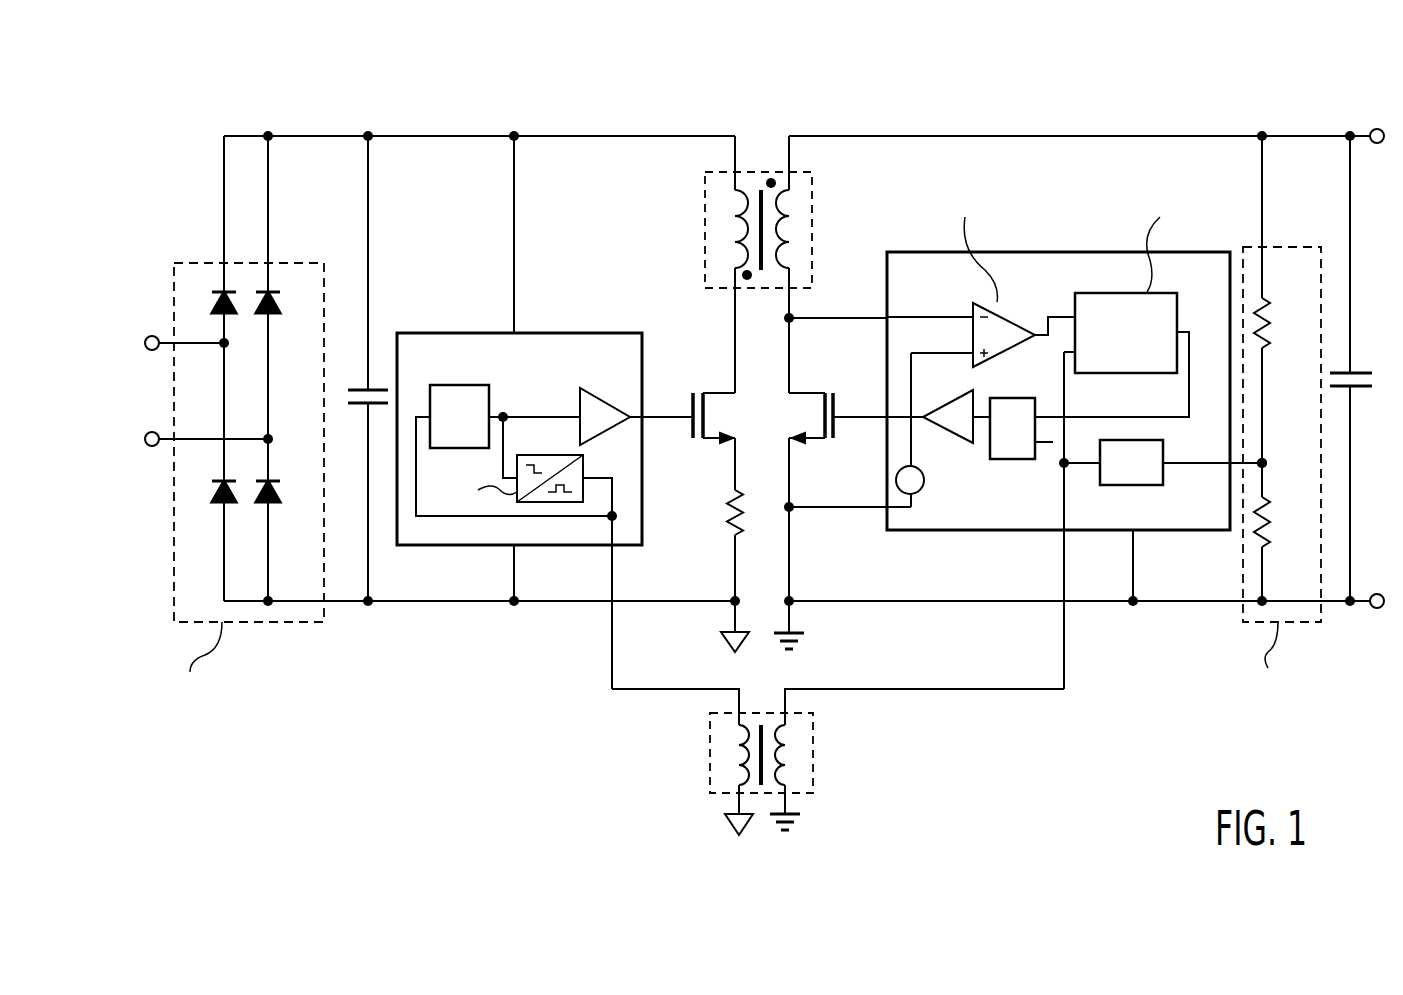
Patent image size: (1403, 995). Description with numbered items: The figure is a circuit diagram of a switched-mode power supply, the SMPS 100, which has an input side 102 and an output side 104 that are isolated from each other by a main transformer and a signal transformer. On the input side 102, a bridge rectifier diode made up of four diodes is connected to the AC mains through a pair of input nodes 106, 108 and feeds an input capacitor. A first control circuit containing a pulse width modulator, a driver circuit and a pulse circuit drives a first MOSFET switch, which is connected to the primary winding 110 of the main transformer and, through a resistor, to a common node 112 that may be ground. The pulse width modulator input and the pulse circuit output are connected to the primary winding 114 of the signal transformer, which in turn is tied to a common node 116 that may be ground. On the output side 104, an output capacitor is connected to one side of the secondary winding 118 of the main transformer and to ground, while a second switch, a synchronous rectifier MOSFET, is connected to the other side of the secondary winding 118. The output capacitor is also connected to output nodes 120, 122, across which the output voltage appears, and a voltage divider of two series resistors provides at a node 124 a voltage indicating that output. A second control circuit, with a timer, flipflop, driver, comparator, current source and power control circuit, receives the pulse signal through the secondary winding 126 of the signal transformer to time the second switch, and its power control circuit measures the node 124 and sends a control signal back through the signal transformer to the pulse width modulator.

The SMPS 100 is at (1158, 745).
The input side 102 is at (410, 112).
The output side 104 is at (1072, 114).
The input node 106 is at (147, 337).
The input node 108 is at (152, 446).
The primary winding 110 is at (745, 187).
The common node 112 is at (727, 648).
The primary winding 114 is at (747, 756).
The common node 116 is at (728, 824).
The secondary winding 118 is at (784, 187).
The output node 120 is at (1372, 128).
The output node 122 is at (1377, 610).
The node 124 is at (1266, 460).
The secondary winding 126 is at (777, 765).